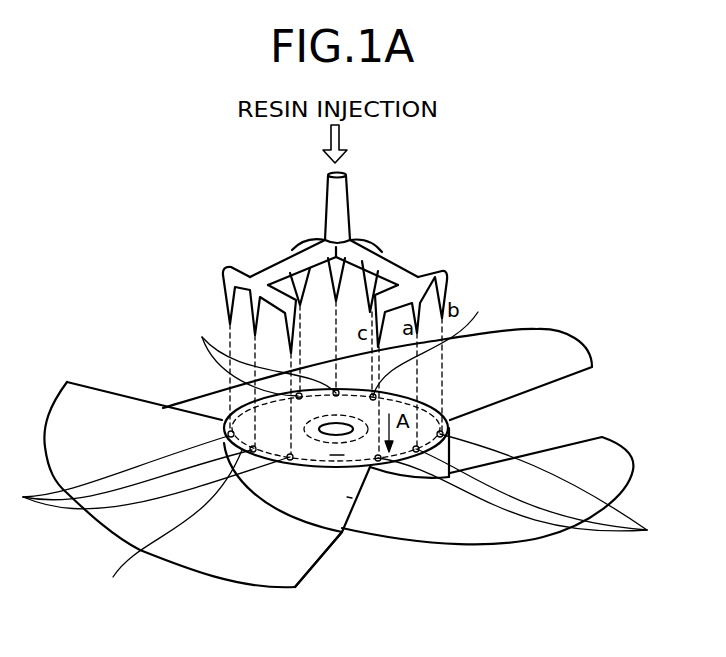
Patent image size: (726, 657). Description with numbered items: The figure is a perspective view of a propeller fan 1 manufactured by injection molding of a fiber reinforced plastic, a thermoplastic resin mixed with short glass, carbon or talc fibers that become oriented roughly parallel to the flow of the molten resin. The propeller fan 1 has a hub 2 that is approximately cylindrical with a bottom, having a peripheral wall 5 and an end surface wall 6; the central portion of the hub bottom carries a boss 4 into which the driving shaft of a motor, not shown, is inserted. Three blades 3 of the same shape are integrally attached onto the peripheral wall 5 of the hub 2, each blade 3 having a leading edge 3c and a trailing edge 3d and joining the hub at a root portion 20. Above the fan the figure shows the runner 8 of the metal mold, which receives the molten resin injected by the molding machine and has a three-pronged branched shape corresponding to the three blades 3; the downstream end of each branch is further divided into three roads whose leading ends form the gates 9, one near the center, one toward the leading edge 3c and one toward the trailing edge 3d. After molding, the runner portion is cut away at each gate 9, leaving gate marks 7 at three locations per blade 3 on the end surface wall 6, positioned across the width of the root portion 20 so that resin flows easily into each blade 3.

The propeller fan 1 is at (335, 466).
The hub 2 is at (334, 521).
The blade 3 is at (532, 353).
The leading edge 3c is at (325, 560).
The trailing edge 3d is at (117, 392).
The boss 4 is at (317, 445).
The peripheral wall 5 is at (347, 497).
The end surface wall 6 is at (338, 455).
The gate marks 7 is at (335, 415).
The runner 8 is at (373, 260).
The gate 9 is at (378, 340).
The root portion 20 is at (168, 527).